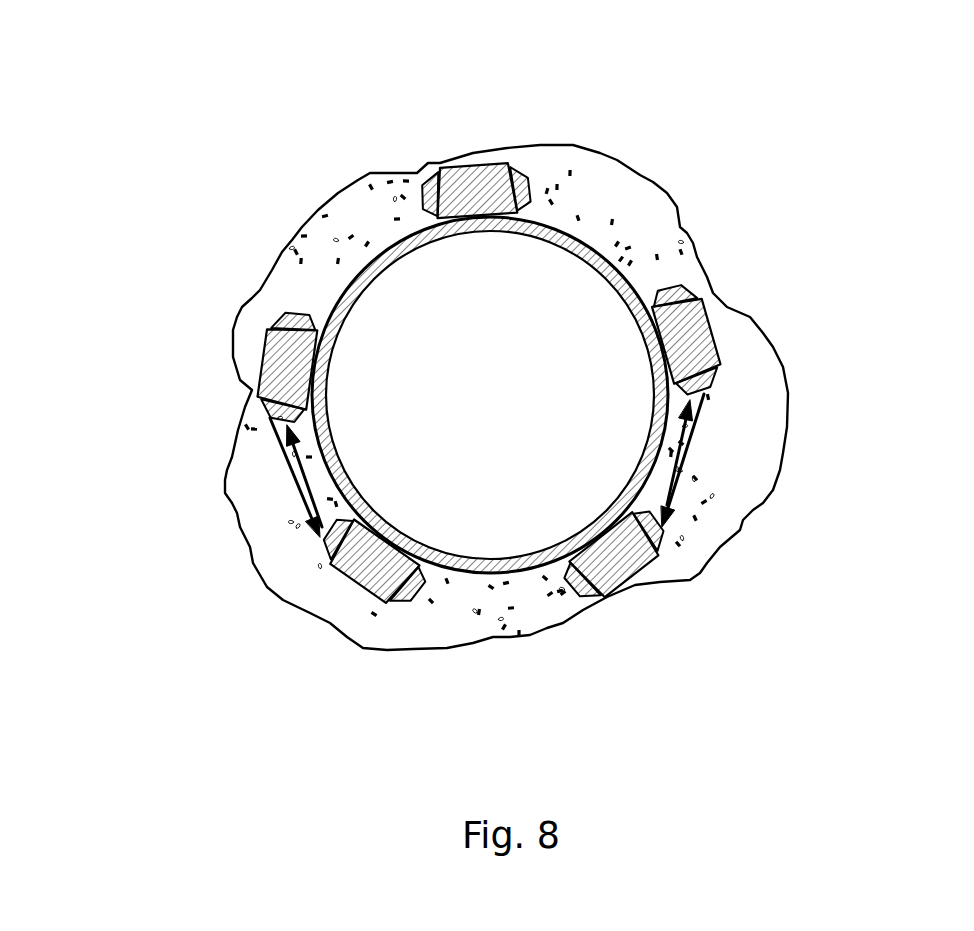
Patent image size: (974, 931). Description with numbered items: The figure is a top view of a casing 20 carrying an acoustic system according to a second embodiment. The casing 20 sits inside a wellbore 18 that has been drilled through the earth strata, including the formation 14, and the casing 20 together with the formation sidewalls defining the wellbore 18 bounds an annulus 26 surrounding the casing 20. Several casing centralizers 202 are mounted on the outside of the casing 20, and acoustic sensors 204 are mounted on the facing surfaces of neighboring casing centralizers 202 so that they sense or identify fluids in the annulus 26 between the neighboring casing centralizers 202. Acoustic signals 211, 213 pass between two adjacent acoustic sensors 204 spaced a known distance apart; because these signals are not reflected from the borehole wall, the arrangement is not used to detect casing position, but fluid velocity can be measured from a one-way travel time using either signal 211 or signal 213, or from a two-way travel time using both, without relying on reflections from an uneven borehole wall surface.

The formation 14 is at (506, 393).
The wellbore 18 is at (284, 250).
The casing 20 is at (512, 573).
The annulus 26 is at (640, 182).
The casing centralizer 202 is at (467, 163).
The acoustic sensor 204 is at (545, 180).
The acoustic signal 211 is at (290, 455).
The acoustic signal 213 is at (318, 510).